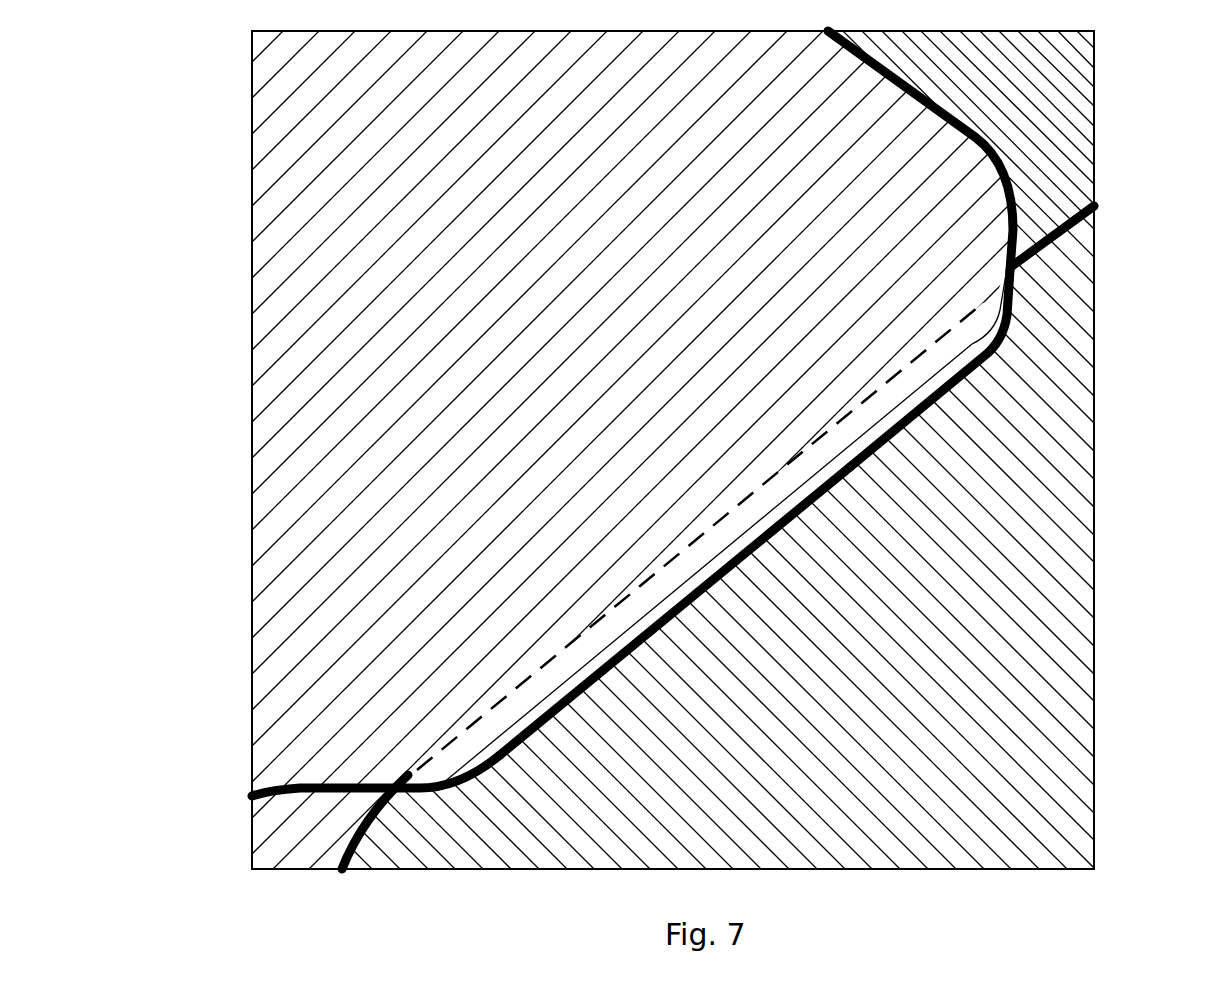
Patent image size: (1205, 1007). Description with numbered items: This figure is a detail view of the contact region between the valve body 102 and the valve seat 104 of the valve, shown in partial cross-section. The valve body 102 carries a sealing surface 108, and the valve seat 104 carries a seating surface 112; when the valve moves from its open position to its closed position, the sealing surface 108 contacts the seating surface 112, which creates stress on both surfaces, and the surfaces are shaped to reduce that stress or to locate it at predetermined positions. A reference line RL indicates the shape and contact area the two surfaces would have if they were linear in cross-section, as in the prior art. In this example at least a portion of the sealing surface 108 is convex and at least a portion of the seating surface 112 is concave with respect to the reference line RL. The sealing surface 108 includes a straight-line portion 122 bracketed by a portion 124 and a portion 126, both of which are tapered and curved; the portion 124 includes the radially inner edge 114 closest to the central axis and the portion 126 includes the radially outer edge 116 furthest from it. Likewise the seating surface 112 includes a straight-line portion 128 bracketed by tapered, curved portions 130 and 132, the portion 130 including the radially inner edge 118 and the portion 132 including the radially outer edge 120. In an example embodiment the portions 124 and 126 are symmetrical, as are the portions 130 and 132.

The valve body 102 is at (1000, 150).
The valve seat 104 is at (350, 837).
The sealing surface 108 is at (675, 611).
The seating surface 112 is at (717, 590).
The radially inner edge 114 is at (394, 782).
The radially outer edge 116 is at (1008, 267).
The radially inner edge 118 is at (432, 817).
The radially outer edge 120 is at (1013, 273).
The portion 122 is at (850, 453).
The portion 124 is at (628, 536).
The portion 126 is at (1000, 293).
The portion 128 is at (900, 438).
The portion 130 is at (437, 790).
The portion 132 is at (1003, 327).
The reference line RL is at (750, 487).